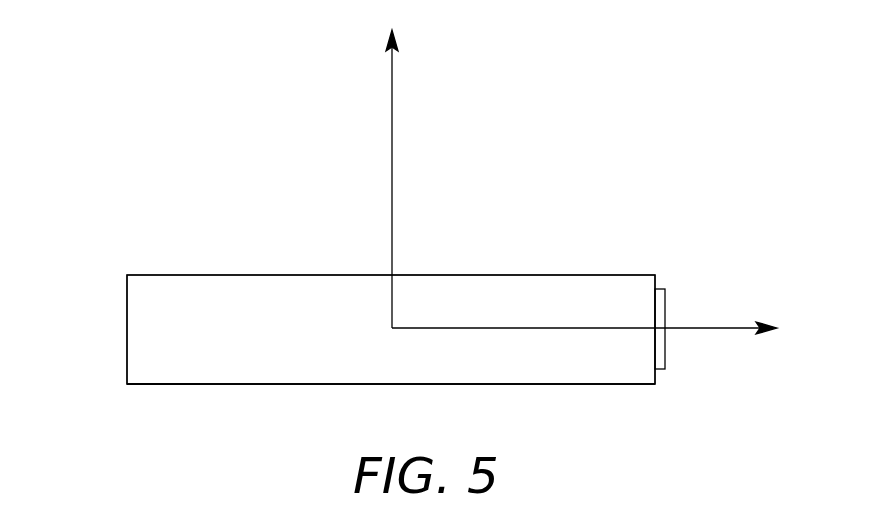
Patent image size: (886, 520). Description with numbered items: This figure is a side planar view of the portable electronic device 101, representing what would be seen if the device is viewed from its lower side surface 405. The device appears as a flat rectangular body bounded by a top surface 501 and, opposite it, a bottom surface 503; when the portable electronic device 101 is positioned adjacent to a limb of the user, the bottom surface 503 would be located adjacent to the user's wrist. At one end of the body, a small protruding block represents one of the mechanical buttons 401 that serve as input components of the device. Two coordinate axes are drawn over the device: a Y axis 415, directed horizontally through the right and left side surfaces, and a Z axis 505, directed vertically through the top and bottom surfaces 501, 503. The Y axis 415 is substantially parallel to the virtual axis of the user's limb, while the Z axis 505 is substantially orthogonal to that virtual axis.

The portable electronic device 101 is at (127, 330).
The mechanical buttons 401 is at (666, 358).
The lower side surface 405 is at (160, 385).
The Y axis 415 is at (495, 328).
The top surface 501 is at (282, 274).
The bottom surface 503 is at (248, 385).
The Z axis 505 is at (391, 155).